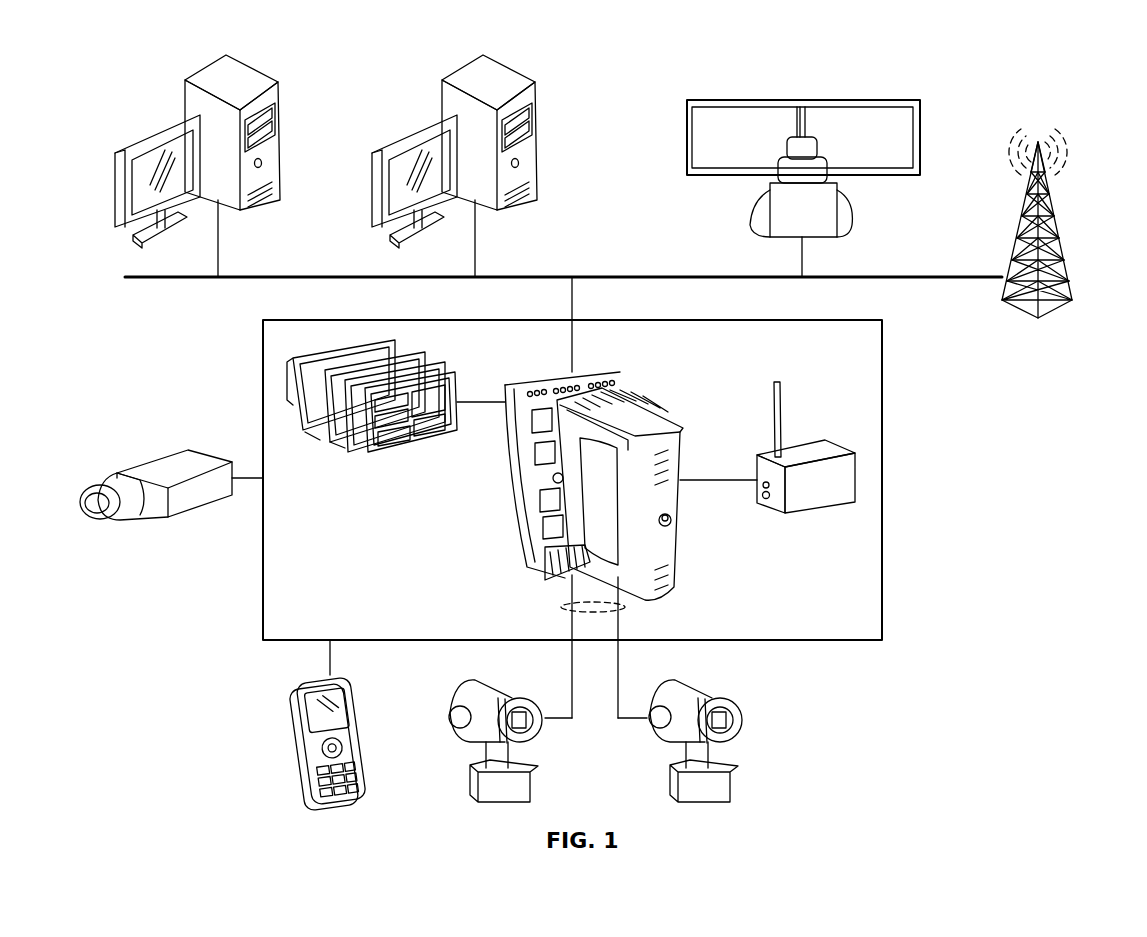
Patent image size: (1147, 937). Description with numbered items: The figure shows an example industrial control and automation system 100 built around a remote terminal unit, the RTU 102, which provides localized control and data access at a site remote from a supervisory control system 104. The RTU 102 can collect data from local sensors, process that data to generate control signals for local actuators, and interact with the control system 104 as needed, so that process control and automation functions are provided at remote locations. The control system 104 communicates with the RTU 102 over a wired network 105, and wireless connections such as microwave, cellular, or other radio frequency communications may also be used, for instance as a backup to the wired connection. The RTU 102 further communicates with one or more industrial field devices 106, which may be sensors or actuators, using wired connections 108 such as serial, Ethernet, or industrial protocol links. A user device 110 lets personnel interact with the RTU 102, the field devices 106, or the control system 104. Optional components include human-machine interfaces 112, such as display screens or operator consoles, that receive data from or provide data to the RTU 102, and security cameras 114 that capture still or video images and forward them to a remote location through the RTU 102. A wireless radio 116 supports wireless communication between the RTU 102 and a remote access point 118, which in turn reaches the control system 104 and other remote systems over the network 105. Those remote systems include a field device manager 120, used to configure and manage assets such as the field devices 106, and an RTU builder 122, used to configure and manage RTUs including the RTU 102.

The industrial control and automation system 100 is at (1012, 594).
The remote terminal unit (RTU) 102 is at (514, 514).
The control system 104 is at (832, 100).
The wired network 105 is at (641, 275).
The industrial field devices 106 is at (450, 779).
The wired connections 108 is at (562, 607).
The user device 110 is at (300, 745).
The human-machine interfaces (HMIs) 112 is at (466, 365).
The security cameras 114 is at (165, 462).
The wireless radio 116 is at (830, 500).
The remote access point 118 is at (1060, 226).
The field device manager (FDM) 120 is at (150, 100).
The RTU builder 122 is at (407, 100).